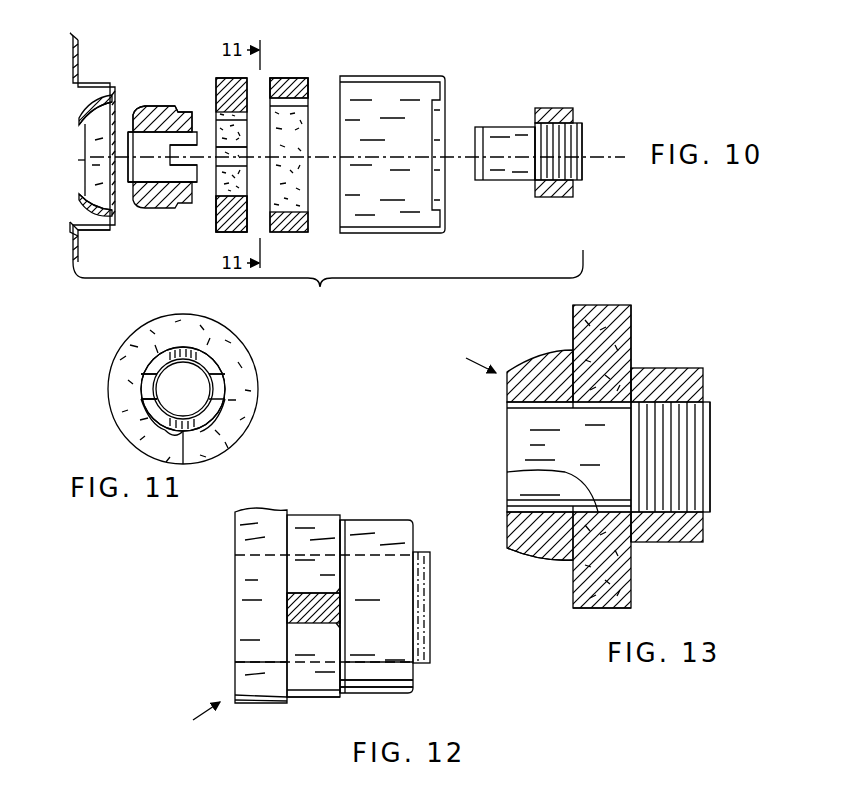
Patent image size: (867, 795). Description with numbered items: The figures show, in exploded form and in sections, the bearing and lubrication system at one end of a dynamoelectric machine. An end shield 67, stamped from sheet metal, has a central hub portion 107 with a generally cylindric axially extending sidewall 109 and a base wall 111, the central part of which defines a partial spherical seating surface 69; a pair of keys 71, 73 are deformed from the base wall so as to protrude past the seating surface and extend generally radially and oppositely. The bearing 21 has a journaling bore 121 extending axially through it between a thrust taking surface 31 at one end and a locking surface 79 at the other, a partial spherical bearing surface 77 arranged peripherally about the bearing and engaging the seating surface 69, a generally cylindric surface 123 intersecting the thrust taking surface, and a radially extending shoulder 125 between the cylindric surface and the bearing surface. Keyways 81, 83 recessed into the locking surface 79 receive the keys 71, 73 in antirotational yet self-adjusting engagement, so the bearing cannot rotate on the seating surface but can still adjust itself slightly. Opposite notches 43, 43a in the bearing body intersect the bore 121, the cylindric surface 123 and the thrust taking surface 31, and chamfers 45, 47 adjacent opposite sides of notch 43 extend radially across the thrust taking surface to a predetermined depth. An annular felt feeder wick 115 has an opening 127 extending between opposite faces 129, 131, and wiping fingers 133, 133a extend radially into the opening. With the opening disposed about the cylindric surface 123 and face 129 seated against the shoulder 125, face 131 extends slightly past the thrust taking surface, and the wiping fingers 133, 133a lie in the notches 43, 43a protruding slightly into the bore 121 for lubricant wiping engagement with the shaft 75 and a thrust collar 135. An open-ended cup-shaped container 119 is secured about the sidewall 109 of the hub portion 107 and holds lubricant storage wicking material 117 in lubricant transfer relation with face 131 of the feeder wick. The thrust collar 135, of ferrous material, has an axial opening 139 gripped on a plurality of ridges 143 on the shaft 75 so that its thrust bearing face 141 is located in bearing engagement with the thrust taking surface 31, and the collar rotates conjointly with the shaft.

In FIG. 12, the bearing 21 is at (193, 720).
In FIG. 13, the bearing 21 is at (468, 362).
In FIG. 10, the thrust taking surface 31 is at (195, 112).
In FIG. 11, the thrust taking surface 31 is at (176, 432).
In FIG. 12, the thrust taking surface 31 is at (340, 540).
In FIG. 13, the thrust taking surface 31 is at (583, 430).
In FIG. 10, the notch 43 is at (172, 143).
In FIG. 11, the notch 43 is at (222, 366).
In FIG. 12, the notch 43 is at (288, 610).
In FIG. 13, the notch 43 is at (545, 356).
In FIG. 11, the notch 43a is at (144, 366).
In FIG. 13, the notch 43a is at (580, 535).
In FIG. 12, the chamfer 45 is at (340, 595).
In FIG. 12, the chamfer 47 is at (341, 623).
In FIG. 10, the end shield 67 is at (76, 38).
In FIG. 10, the partial spherical seating surface 69 is at (86, 112).
In FIG. 10, the key 71 is at (110, 105).
In FIG. 10, the key 73 is at (108, 208).
In FIG. 10, the shaft 75 is at (513, 127).
In FIG. 13, the shaft 75 is at (516, 448).
In FIG. 10, the partial spherical bearing surface 77 is at (150, 106).
In FIG. 12, the partial spherical bearing surface 77 is at (258, 706).
In FIG. 13, the partial spherical bearing surface 77 is at (518, 554).
In FIG. 10, the locking surface 79 is at (130, 170).
In FIG. 10, the keyway 81 is at (130, 132).
In FIG. 10, the keyway 83 is at (128, 192).
In FIG. 10, the hub portion 107 is at (80, 238).
In FIG. 10, the sidewall 109 is at (95, 236).
In FIG. 10, the base wall 111 is at (97, 171).
In FIG. 10, the feeder wick 115 is at (225, 78).
In FIG. 11, the feeder wick 115 is at (228, 332).
In FIG. 10, the lubricant storage wicking material 117 is at (298, 82).
In FIG. 13, the lubricant storage wicking material 117 is at (606, 305).
In FIG. 10, the container 119 is at (392, 76).
In FIG. 10, the journaling bore 121 is at (172, 210).
In FIG. 11, the journaling bore 121 is at (190, 347).
In FIG. 12, the journaling bore 121 is at (256, 662).
In FIG. 13, the journaling bore 121 is at (510, 498).
In FIG. 10, the cylindric surface 123 is at (176, 208).
In FIG. 11, the cylindric surface 123 is at (156, 425).
In FIG. 12, the cylindric surface 123 is at (318, 700).
In FIG. 13, the cylindric surface 123 is at (575, 592).
In FIG. 10, the shoulder 125 is at (175, 106).
In FIG. 12, the shoulder 125 is at (295, 700).
In FIG. 13, the shoulder 125 is at (573, 575).
In FIG. 10, the opening 127 is at (250, 190).
In FIG. 11, the opening 127 is at (240, 440).
In FIG. 10, the face 129 is at (220, 78).
In FIG. 13, the face 129 is at (572, 322).
In FIG. 10, the face 131 is at (250, 90).
In FIG. 11, the face 131 is at (203, 452).
In FIG. 12, the face 131 is at (288, 597).
In FIG. 13, the face 131 is at (632, 320).
In FIG. 10, the wiping finger 133 is at (246, 152).
In FIG. 11, the wiping finger 133 is at (222, 386).
In FIG. 13, the wiping finger 133 is at (569, 457).
In FIG. 11, the wiping finger 133a is at (142, 386).
In FIG. 13, the wiping finger 133a is at (530, 488).
In FIG. 10, the thrust collar 135 is at (550, 108).
In FIG. 12, the thrust collar 135 is at (414, 680).
In FIG. 13, the thrust collar 135 is at (688, 543).
In FIG. 10, the opening 139 is at (572, 110).
In FIG. 12, the opening 139 is at (385, 672).
In FIG. 13, the opening 139 is at (680, 498).
In FIG. 10, the thrust bearing face 141 is at (534, 118).
In FIG. 12, the thrust bearing face 141 is at (345, 680).
In FIG. 13, the thrust bearing face 141 is at (636, 540).
In FIG. 10, the ridges 143 is at (586, 143).
In FIG. 12, the ridges 143 is at (428, 602).
In FIG. 13, the ridges 143 is at (690, 426).